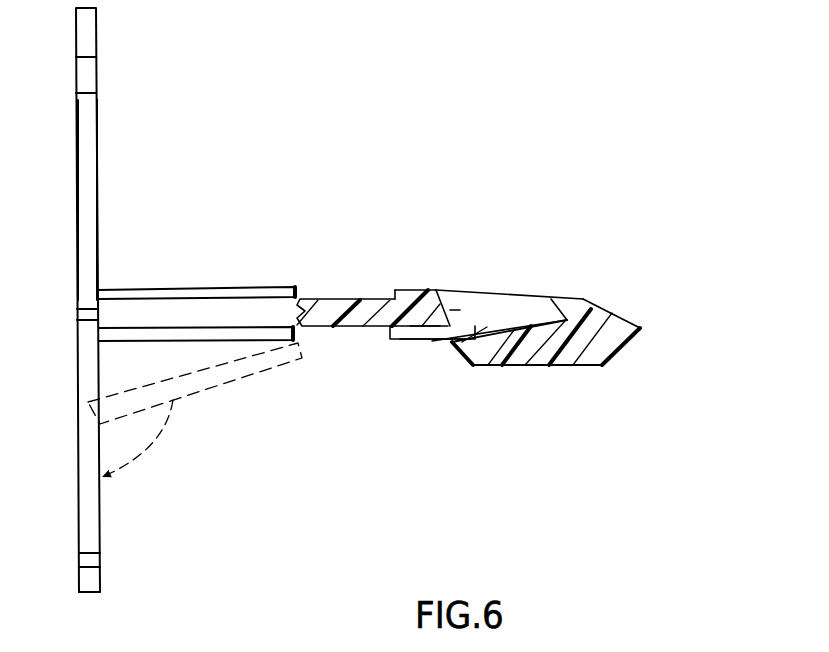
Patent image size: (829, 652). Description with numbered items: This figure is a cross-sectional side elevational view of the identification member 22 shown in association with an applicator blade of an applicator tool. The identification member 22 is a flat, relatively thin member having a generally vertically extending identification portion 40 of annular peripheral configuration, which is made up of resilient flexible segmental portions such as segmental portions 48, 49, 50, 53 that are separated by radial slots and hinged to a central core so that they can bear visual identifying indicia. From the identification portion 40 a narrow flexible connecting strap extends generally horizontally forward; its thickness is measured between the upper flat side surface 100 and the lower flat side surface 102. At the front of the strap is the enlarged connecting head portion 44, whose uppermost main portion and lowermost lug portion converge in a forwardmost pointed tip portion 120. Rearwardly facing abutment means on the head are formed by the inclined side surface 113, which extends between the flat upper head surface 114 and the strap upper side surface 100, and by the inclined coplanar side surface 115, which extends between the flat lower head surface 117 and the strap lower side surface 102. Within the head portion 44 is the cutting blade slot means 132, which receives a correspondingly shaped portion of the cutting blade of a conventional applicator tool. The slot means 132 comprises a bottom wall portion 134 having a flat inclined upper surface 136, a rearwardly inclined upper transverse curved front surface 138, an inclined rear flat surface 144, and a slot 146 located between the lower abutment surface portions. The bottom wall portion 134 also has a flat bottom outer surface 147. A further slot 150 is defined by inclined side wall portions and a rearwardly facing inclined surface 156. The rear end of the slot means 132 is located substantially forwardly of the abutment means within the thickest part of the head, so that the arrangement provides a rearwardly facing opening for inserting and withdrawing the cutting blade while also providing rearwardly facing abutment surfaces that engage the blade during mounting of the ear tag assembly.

The identification member 22 is at (165, 300).
The segmental portion 53 is at (114, 49).
The segmental portion 48 is at (117, 200).
The segmental portion 49 is at (119, 431).
The identification portion 40 is at (119, 590).
The segmental portion 50 is at (167, 492).
The lower flat side surface 102 is at (210, 351).
The upper flat side surface 100 is at (372, 272).
The inclined side surface 113 is at (407, 263).
The flat upper head surface 114 is at (425, 245).
The connecting head portion 44 is at (558, 241).
The inclined coplanar side surface 115 is at (398, 370).
The flat lower head surface 117 is at (417, 378).
The slot 146 is at (419, 385).
The flat inclined upper surface 136 is at (499, 275).
The rearwardly inclined upper transverse curved front surface 138 is at (571, 270).
The inclined rear flat surface 144 is at (477, 255).
The pointed tip portion 120 is at (594, 331).
The cutting blade slot means 132 is at (429, 438).
The slot 150 is at (478, 392).
The rearwardly facing inclined surface 156 is at (494, 393).
The bottom wall portion 134 is at (542, 400).
The flat bottom outer surface 147 is at (602, 390).